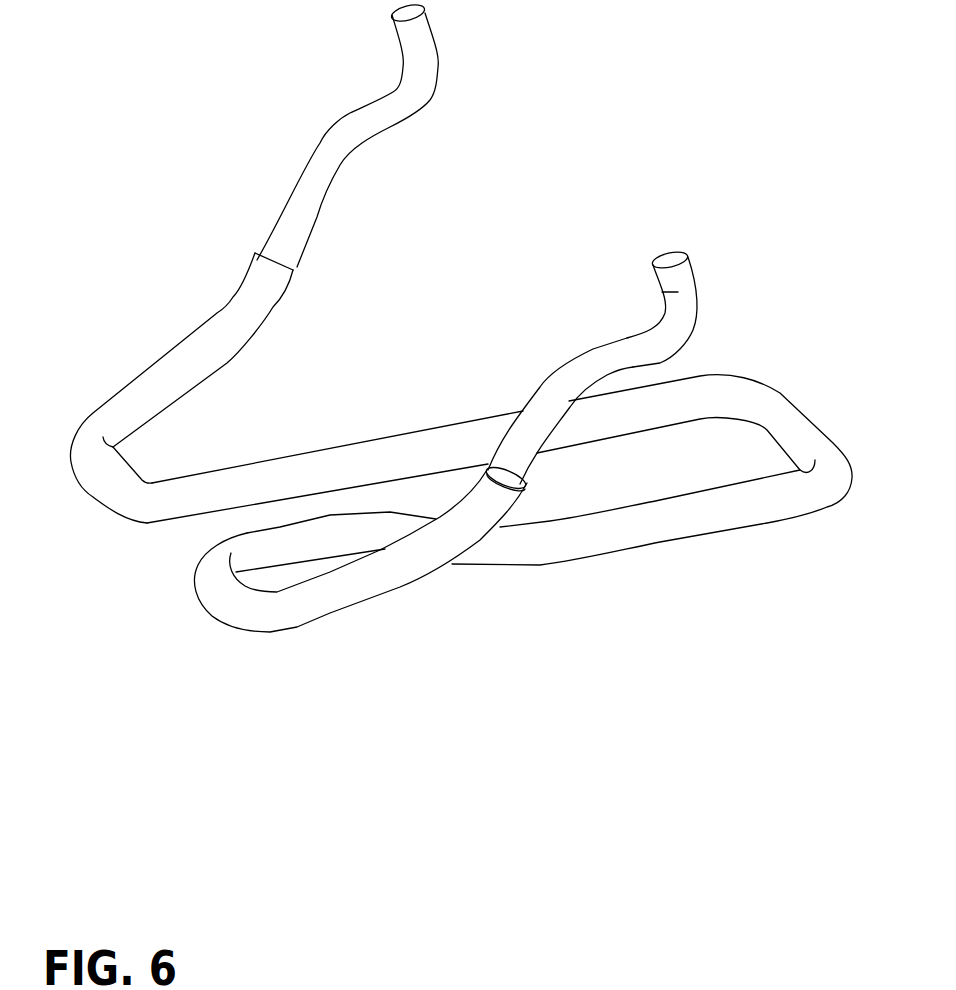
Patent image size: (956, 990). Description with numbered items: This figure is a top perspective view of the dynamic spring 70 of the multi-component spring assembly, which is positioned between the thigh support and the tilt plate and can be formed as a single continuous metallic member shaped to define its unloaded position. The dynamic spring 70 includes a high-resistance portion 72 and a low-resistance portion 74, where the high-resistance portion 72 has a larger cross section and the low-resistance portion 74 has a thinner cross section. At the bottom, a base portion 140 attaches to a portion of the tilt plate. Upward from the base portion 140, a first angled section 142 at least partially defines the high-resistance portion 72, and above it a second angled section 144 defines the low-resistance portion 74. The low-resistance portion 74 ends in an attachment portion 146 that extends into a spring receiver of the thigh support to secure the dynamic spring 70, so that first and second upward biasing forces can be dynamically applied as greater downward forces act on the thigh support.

The dynamic spring 70 is at (230, 160).
The high-resistance portion 72 is at (213, 315).
The low-resistance portion 74 is at (332, 122).
The base portion 140 is at (683, 512).
The first angled section 142 is at (423, 553).
The second angled section 144 is at (548, 405).
The attachment portion 146 is at (662, 293).